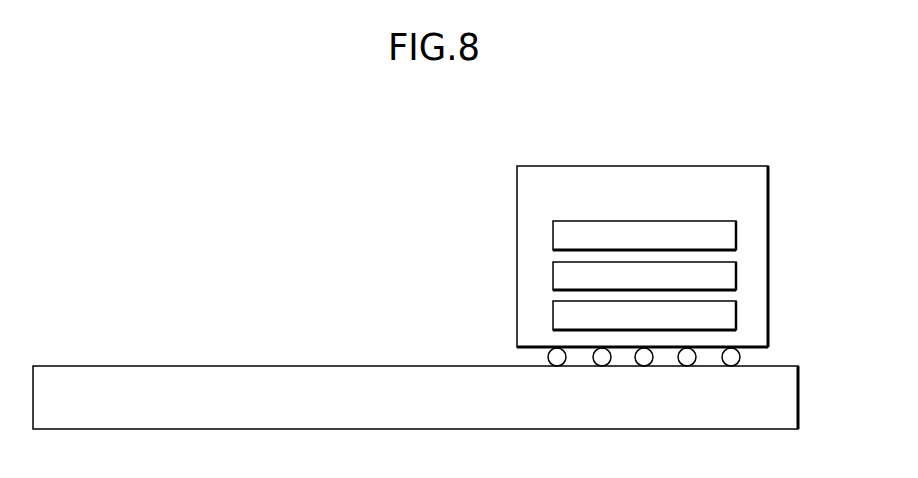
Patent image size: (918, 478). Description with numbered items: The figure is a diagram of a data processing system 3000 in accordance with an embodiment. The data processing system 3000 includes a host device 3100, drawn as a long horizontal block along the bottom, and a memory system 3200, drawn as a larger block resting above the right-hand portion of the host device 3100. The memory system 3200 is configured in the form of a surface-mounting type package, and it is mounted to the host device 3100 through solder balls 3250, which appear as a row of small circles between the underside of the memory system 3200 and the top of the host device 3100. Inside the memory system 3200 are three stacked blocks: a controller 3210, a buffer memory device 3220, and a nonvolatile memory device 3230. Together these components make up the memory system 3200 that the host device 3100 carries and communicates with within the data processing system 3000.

The data processing system 3000 is at (103, 102).
The host device 3100 is at (415, 397).
The memory system 3200 is at (642, 256).
The controller 3210 is at (644, 235).
The buffer memory device 3220 is at (644, 277).
The nonvolatile memory device 3230 is at (644, 316).
The solder balls 3250 is at (750, 357).